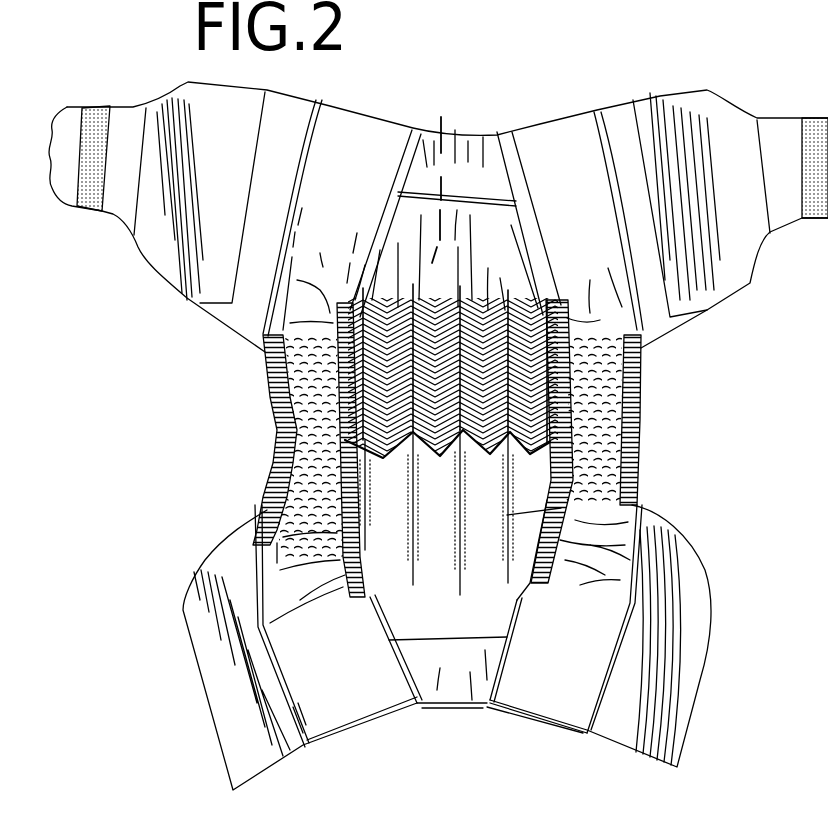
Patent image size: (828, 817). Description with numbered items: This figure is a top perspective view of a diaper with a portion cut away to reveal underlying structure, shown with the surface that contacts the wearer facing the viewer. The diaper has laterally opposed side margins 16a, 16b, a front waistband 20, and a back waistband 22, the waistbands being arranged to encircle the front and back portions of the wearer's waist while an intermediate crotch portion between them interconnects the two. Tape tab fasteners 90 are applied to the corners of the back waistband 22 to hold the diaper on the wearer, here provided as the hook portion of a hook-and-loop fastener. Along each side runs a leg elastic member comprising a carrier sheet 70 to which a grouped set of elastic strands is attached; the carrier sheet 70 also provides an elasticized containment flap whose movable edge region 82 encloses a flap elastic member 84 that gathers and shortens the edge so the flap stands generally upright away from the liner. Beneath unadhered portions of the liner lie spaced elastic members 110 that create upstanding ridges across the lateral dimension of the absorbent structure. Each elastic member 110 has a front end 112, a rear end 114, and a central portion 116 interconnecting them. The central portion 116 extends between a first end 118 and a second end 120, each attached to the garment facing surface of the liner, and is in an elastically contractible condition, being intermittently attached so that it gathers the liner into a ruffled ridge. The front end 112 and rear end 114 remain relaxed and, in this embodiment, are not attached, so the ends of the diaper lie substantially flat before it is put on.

The back waistband 22 is at (487, 160).
The rear end 114 is at (441, 178).
The tape tab fasteners 90 is at (784, 127).
The second end 120 is at (531, 352).
The central portion 116 is at (606, 408).
The side margin 16a is at (631, 460).
The first end 118 is at (561, 508).
The elastic member 110 is at (268, 416).
The side margin 16b is at (263, 473).
The front end 112 is at (497, 587).
The flap elastic member 84 is at (567, 600).
The movable edge region 82 is at (510, 607).
The front waistband 20 is at (457, 663).
The carrier sheet 70 is at (560, 693).